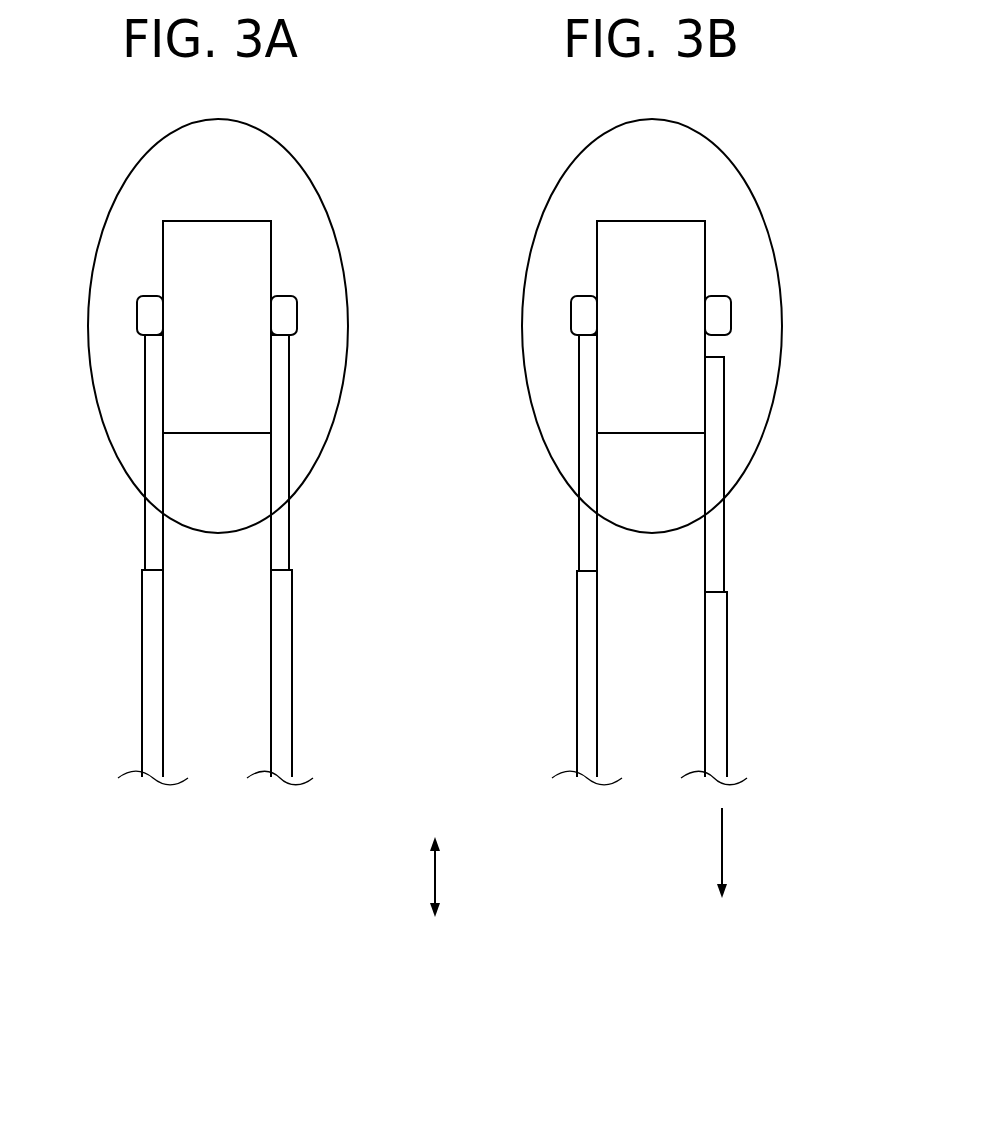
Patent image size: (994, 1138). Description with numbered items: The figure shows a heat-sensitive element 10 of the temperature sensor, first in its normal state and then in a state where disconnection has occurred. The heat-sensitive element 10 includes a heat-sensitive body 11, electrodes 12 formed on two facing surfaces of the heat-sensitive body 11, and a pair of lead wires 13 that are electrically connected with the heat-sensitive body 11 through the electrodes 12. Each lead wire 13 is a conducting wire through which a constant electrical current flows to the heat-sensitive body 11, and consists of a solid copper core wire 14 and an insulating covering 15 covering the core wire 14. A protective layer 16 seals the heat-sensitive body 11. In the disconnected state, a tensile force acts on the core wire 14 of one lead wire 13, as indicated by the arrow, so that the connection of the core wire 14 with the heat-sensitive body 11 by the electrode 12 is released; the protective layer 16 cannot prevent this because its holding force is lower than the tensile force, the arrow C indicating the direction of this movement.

In FIG. 3A, the heat-sensitive element 10 is at (218, 443).
In FIG. 3B, the heat-sensitive element 10 is at (653, 443).
In FIG. 3A, the heat-sensitive body 11 is at (272, 261).
In FIG. 3B, the heat-sensitive body 11 is at (706, 261).
In FIG. 3A, the electrodes 12 is at (298, 318).
In FIG. 3B, the electrodes 12 is at (732, 318).
In FIG. 3A, the lead wire 13 is at (142, 638).
In FIG. 3B, the lead wire 13 is at (577, 691).
In FIG. 3A, the core wire 14 is at (143, 558).
In FIG. 3B, the core wire 14 is at (577, 558).
In FIG. 3A, the insulating covering 15 is at (217, 673).
In FIG. 3B, the insulating covering 15 is at (652, 674).
In FIG. 3A, the protective layer 16 is at (324, 206).
In FIG. 3B, the protective layer 16 is at (758, 206).
In FIG. 3A, the sliding direction C is at (437, 880).